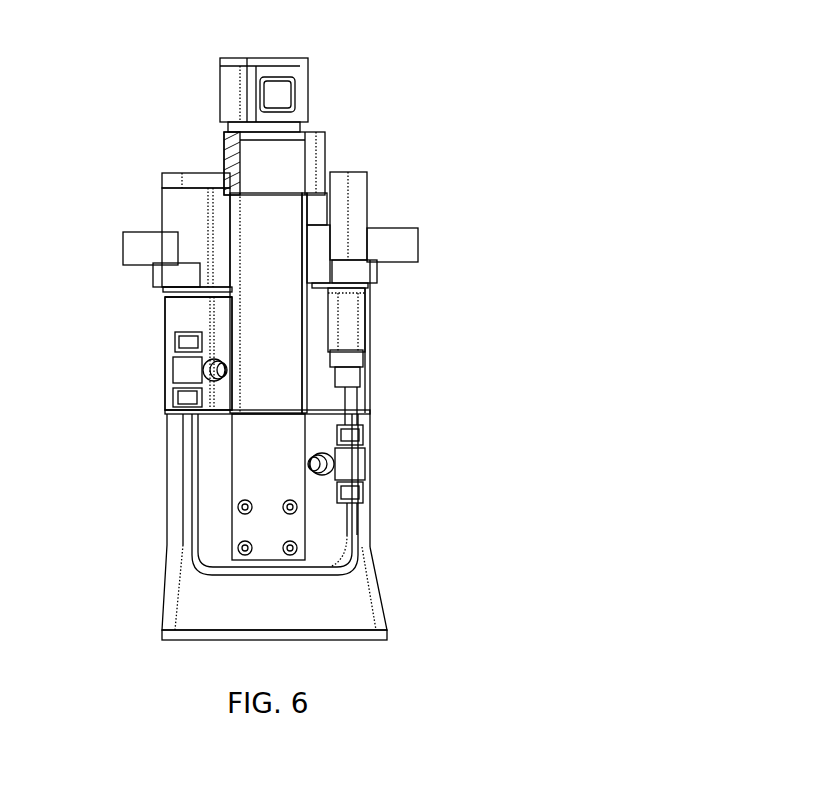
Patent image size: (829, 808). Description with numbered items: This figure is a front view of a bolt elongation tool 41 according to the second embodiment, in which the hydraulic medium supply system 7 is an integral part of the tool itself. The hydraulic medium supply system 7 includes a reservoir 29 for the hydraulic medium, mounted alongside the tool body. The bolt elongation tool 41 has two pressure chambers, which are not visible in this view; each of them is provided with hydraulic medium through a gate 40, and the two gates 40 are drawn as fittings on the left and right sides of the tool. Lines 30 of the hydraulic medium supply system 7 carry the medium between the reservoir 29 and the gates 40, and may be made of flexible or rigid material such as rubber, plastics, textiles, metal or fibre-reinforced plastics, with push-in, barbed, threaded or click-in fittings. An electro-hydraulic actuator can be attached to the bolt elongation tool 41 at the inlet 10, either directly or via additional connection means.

The bolt elongation tool 41 is at (415, 78).
The inlet 10 is at (186, 322).
The gate 40 is at (188, 368).
The reservoir 29 is at (352, 320).
The hydraulic medium supply system 7 is at (374, 366).
The lines 30 is at (188, 483).